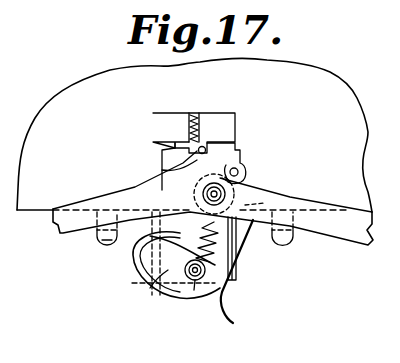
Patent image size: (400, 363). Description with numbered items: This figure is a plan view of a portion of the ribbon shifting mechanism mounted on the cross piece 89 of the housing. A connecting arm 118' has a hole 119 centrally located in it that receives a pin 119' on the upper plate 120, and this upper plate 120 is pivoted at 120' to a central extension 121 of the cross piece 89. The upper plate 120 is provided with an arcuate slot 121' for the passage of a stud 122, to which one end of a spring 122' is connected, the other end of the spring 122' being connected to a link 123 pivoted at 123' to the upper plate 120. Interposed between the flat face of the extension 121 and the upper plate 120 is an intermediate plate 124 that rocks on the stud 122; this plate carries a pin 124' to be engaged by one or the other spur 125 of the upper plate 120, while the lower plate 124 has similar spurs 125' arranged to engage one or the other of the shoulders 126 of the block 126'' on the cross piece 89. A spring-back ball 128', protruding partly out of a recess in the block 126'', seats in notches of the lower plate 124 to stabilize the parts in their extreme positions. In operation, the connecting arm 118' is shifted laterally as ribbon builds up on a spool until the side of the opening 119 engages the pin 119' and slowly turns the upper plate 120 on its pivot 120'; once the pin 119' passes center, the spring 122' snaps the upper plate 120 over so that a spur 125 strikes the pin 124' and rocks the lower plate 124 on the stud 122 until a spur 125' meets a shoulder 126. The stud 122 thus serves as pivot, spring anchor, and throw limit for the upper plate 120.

The cross piece 89 is at (58, 125).
The connecting arm 118' is at (157, 173).
The hole 119 is at (263, 173).
The pin 119' is at (272, 169).
The upper plate 120 is at (206, 277).
The pivot 120' is at (187, 240).
The central extension 121 is at (241, 287).
The arcuate slot 121' is at (140, 296).
The stud 122 is at (202, 307).
The spring 122' is at (256, 253).
The link 123 is at (260, 248).
The pivot 123' is at (262, 155).
The intermediate plate 124 is at (213, 198).
The pin 124' is at (237, 119).
The spur 125 is at (297, 191).
The spur 125' is at (285, 137).
The shoulder 126 is at (193, 111).
The block 126'' is at (171, 115).
The spring-back ball 128' is at (235, 111).